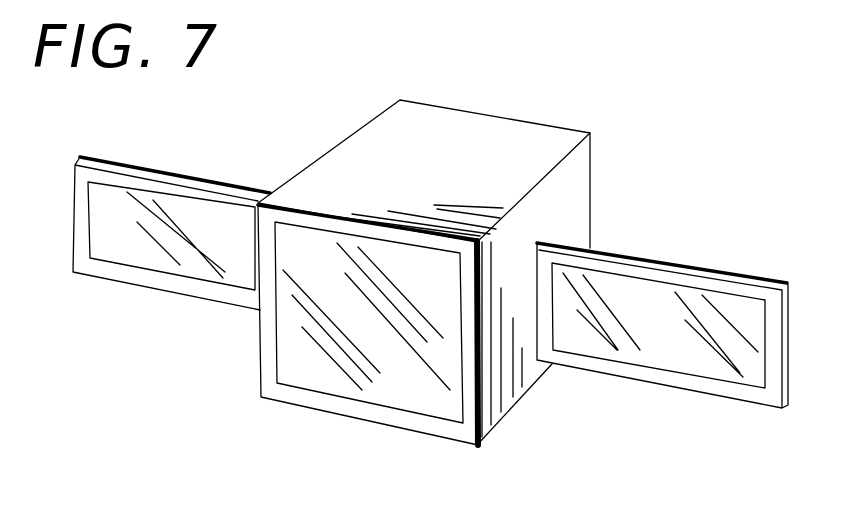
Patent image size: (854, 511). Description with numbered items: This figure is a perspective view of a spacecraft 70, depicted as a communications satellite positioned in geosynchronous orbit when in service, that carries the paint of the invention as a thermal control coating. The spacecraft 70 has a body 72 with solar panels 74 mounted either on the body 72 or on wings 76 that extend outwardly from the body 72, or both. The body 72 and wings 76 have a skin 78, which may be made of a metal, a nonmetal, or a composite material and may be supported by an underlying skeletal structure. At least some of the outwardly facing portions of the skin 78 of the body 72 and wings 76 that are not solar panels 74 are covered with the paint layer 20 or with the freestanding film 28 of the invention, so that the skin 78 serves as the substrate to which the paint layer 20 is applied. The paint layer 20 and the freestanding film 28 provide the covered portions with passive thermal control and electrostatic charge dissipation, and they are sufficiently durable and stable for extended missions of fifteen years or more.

The spacecraft 70 is at (380, 104).
The body 72 is at (500, 123).
The wings 76 is at (707, 273).
The solar panels 74 is at (700, 363).
The freestanding film 28 is at (506, 395).
The paint layer 20 is at (264, 354).
The skin 78 is at (312, 402).